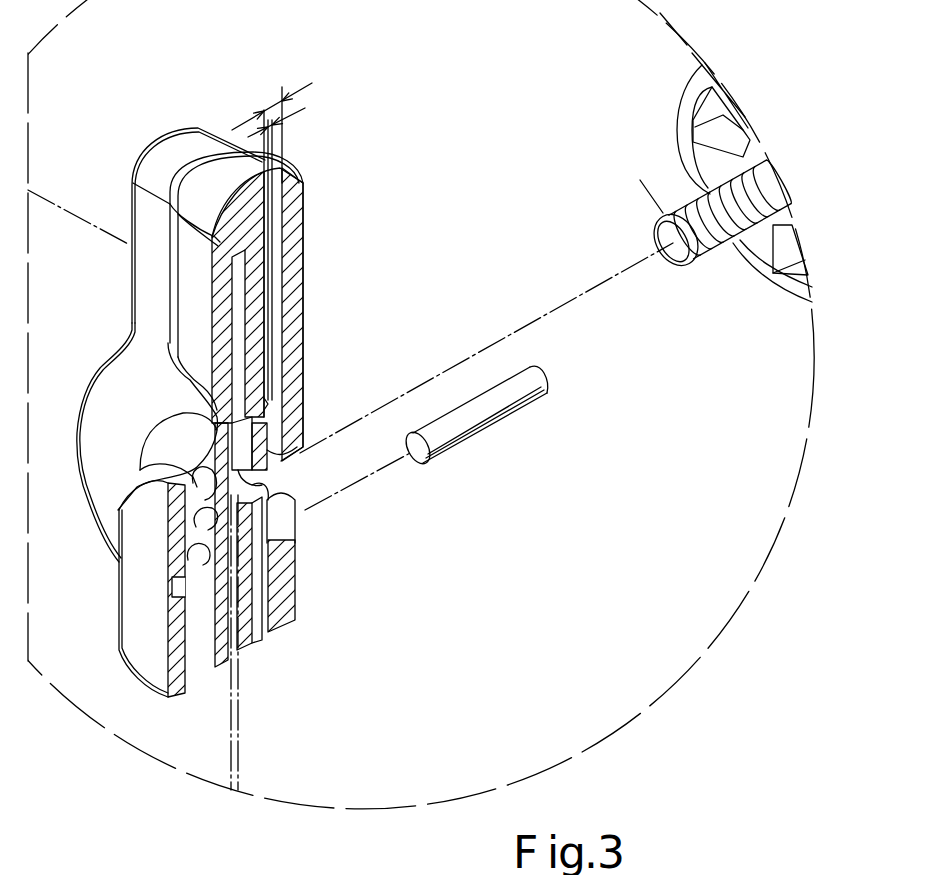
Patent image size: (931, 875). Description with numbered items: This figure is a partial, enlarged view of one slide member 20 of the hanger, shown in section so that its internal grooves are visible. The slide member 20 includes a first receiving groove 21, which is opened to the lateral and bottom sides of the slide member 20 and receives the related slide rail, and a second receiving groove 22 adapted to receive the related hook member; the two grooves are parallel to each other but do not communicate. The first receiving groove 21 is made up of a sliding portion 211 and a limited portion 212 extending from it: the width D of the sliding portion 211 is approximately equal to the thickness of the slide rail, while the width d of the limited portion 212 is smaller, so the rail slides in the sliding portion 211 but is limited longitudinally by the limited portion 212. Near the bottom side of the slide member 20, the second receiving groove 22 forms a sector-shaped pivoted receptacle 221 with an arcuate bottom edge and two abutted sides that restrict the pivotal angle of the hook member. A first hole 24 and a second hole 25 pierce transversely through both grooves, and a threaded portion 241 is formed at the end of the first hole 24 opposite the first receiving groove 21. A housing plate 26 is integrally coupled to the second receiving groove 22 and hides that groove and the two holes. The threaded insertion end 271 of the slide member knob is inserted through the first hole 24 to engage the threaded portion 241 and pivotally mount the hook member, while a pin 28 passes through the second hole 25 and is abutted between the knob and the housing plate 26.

The slide member 20 is at (225, 107).
The first receiving groove 21 is at (277, 326).
The sliding portion 211 is at (277, 268).
The limited portion 212 is at (270, 407).
The second receiving groove 22 is at (240, 377).
The pivoted receptacle 221 is at (243, 607).
The first hole 24 is at (267, 472).
The threaded portion 241 is at (207, 517).
The second hole 25 is at (267, 525).
The housing plate 26 is at (130, 612).
The pin 28 is at (467, 417).
The threaded insertion end 271 is at (617, 157).